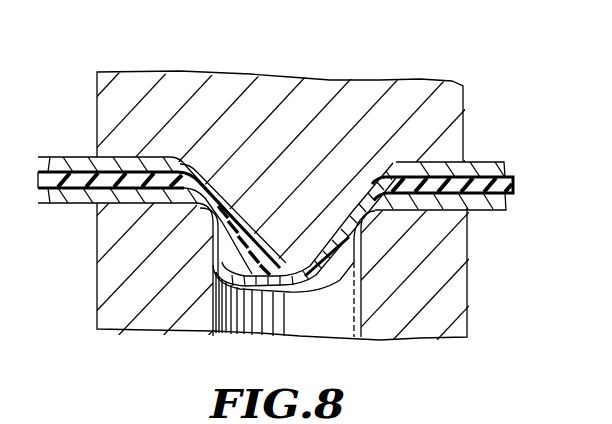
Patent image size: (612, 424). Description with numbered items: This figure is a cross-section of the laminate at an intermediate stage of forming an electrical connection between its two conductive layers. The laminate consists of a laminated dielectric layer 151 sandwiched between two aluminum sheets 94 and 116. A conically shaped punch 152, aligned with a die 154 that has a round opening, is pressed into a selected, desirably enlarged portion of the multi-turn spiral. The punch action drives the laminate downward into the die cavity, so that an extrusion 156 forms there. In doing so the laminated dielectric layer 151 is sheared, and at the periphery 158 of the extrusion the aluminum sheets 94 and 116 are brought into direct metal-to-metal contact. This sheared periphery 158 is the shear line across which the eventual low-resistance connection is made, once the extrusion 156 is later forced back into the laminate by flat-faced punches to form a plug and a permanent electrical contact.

The aluminum sheet 94 is at (62, 156).
The aluminum sheet 116 is at (52, 205).
The laminated dielectric layer 151 is at (513, 183).
The conically shaped punch 152 is at (449, 85).
The die 154 is at (463, 317).
The extrusion 156 is at (303, 296).
The periphery of the extrusion 158 is at (377, 179).